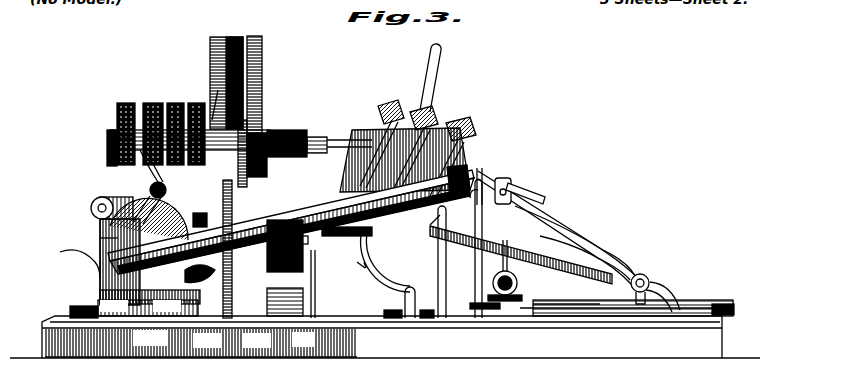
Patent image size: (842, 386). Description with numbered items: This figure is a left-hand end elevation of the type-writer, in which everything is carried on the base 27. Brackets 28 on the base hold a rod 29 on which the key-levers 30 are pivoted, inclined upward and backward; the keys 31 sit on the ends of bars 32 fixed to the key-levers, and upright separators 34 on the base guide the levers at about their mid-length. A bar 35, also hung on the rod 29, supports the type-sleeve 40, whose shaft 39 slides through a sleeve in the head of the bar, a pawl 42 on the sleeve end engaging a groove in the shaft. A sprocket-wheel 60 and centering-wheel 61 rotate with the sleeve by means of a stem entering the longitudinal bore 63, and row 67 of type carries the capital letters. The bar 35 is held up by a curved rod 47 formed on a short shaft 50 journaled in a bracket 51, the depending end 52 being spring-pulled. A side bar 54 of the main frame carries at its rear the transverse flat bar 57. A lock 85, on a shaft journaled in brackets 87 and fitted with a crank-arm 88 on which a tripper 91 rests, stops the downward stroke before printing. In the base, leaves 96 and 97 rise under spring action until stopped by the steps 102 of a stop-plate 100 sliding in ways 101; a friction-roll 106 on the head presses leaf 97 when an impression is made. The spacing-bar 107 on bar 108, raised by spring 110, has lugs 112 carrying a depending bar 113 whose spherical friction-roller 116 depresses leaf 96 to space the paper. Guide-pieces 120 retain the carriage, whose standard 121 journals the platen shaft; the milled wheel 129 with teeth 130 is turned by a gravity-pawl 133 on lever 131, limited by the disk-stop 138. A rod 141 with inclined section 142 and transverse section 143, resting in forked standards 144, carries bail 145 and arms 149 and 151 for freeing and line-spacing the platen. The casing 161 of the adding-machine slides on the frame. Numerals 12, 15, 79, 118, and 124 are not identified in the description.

The hand lever 12 is at (431, 75).
The arm 15 is at (445, 122).
The base 27 is at (527, 353).
The brackets 28 is at (670, 292).
The rod 29 is at (650, 280).
The key-levers 30 is at (360, 138).
The keys 31 is at (395, 110).
The bars 32 is at (472, 133).
The upright separators 34 is at (438, 262).
The bar 35 is at (424, 234).
The shaft 39 is at (213, 160).
The type-sleeve 40 is at (126, 103).
The pawl 42 is at (107, 148).
The curved rod 47 is at (348, 268).
The short shaft 50 is at (411, 292).
The bracket 51 is at (404, 302).
The downwardly-depending end 52 is at (408, 318).
The side bar 54 is at (553, 222).
The transverse flat bar 57 is at (255, 168).
The sprocket-wheel 60 is at (262, 115).
The centering-wheel 61 is at (262, 95).
The longitudinal bore 63 is at (210, 120).
The row of type 67 is at (152, 103).
The gear 79 is at (235, 161).
The bar or lock 85 is at (366, 265).
The brackets 87 is at (372, 226).
The crank-arm 88 is at (370, 261).
The tripper 91 is at (314, 244).
The leaf 96 is at (522, 300).
The leaf 97 is at (303, 340).
The stop-plate 100 is at (592, 316).
The ways 101 is at (712, 305).
The steps 102 is at (556, 316).
The friction-roll 106 is at (267, 280).
The spacing-bar 107 is at (528, 196).
The bar 108 is at (592, 240).
The spring 110 is at (618, 244).
The lugs 112 is at (510, 184).
The bar 113 is at (548, 222).
The spherical friction-roller 116 is at (510, 305).
The base portion 118 is at (238, 318).
The guide-pieces 120 is at (70, 310).
The standard 121 is at (100, 294).
The wire 124 is at (60, 252).
The milled wheel 129 is at (100, 238).
The teeth 130 is at (100, 225).
The lever 131 is at (165, 198).
The gravity-pawl 133 is at (405, 160).
The disk-stop 138 is at (90, 208).
The rod 141 is at (148, 307).
The inclined rod-section 142 is at (258, 240).
The transverse rod-section 143 is at (150, 338).
The forked standards 144 is at (475, 266).
The bail 145 is at (210, 213).
The arm 149 is at (188, 280).
The arm 151 is at (200, 318).
The casing 161 is at (230, 37).